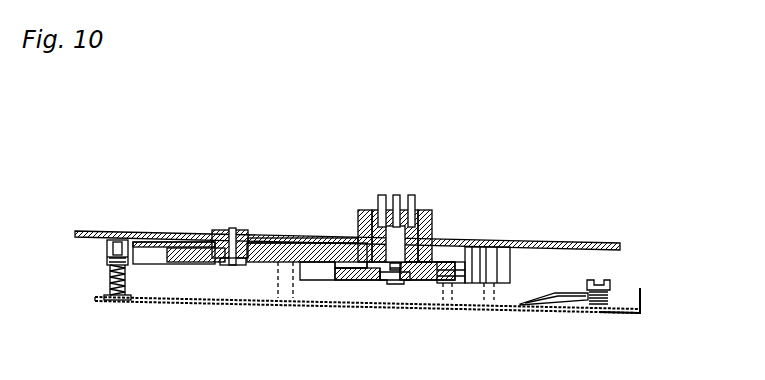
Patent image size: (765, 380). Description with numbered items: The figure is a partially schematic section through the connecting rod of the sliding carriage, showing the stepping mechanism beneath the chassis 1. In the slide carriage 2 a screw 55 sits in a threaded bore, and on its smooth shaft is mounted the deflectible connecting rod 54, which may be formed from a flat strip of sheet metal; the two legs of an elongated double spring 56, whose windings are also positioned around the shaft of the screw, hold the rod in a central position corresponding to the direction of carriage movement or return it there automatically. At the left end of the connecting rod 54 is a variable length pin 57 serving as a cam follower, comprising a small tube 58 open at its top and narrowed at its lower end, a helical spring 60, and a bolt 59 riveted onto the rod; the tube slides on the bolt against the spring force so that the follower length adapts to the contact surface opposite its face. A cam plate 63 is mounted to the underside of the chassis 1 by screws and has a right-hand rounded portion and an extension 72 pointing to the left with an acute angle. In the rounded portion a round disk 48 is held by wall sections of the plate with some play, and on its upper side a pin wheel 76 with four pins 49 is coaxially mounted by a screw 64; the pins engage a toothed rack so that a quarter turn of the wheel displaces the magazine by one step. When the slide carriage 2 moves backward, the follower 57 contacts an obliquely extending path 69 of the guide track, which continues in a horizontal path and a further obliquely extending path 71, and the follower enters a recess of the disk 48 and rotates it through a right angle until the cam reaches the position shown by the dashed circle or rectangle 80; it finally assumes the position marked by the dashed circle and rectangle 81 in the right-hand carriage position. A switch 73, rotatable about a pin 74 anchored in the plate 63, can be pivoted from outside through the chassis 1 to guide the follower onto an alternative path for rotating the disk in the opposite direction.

The chassis 1 is at (525, 243).
The slide carriage 2 is at (638, 313).
The round disk 48 is at (352, 281).
The pins 49 is at (379, 198).
The connecting rod 54 is at (238, 303).
The screw 55 is at (606, 281).
The double spring 56 is at (566, 294).
The pin 57 is at (99, 293).
The small tube 58 is at (118, 244).
The bolt 59 is at (108, 259).
The helical spring 60 is at (122, 288).
The cam plate 63 is at (273, 239).
The screw 64 is at (396, 285).
The obliquely extending path 69 is at (150, 243).
The obliquely extending path 71 is at (312, 250).
The extension 72 is at (272, 280).
The switch 73 is at (195, 256).
The pin 74 is at (232, 231).
The pin wheel 76 is at (428, 216).
The circle or rectangle 80 is at (452, 284).
The circle and rectangle 81 is at (496, 284).